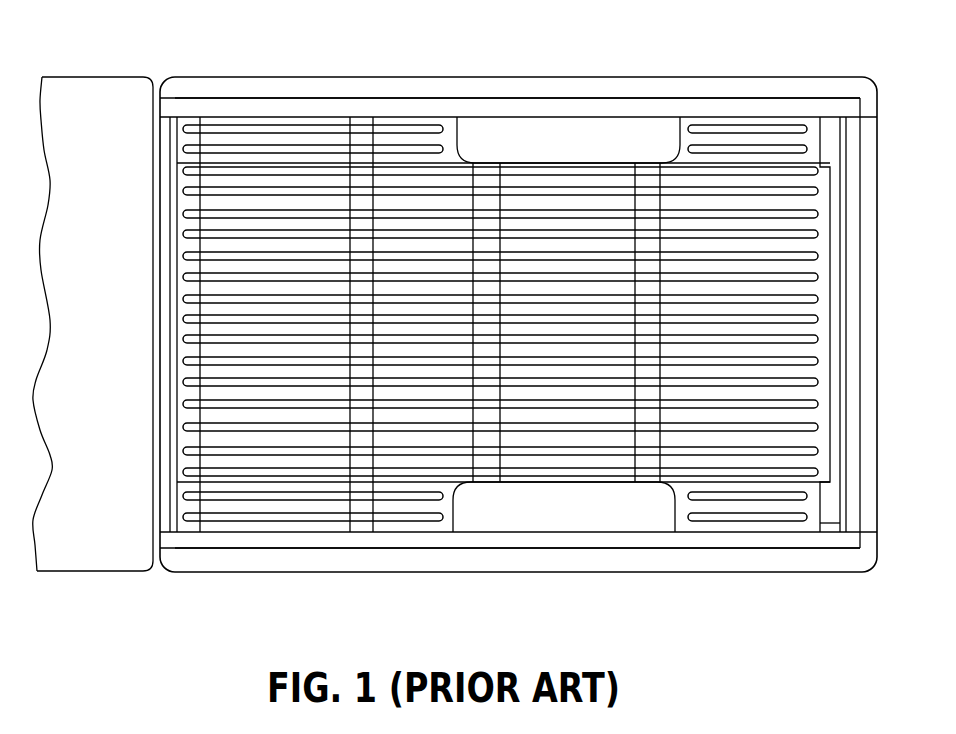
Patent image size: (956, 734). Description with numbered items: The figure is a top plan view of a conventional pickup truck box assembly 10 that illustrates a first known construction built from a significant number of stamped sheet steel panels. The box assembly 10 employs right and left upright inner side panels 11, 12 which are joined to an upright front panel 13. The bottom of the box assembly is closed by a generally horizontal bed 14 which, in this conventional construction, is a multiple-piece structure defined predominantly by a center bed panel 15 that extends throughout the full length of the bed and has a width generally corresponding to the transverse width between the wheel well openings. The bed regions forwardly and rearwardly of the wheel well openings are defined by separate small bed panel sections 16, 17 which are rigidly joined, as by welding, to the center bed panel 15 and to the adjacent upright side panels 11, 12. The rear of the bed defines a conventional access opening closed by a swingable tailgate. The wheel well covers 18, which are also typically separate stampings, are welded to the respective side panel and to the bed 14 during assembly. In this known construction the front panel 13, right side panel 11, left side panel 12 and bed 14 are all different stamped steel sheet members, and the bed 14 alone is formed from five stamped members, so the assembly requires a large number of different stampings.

The box assembly 10 is at (240, 86).
The right upright inner side panel 11 is at (655, 105).
The left upright inner side panel 12 is at (510, 540).
The upright front panel 13 is at (93, 324).
The bed 14 is at (282, 526).
The center bed panel 15 is at (74, 460).
The small bed panel section 16 is at (398, 137).
The small bed panel section 17 is at (750, 143).
The wheel well cover 18 is at (544, 145).